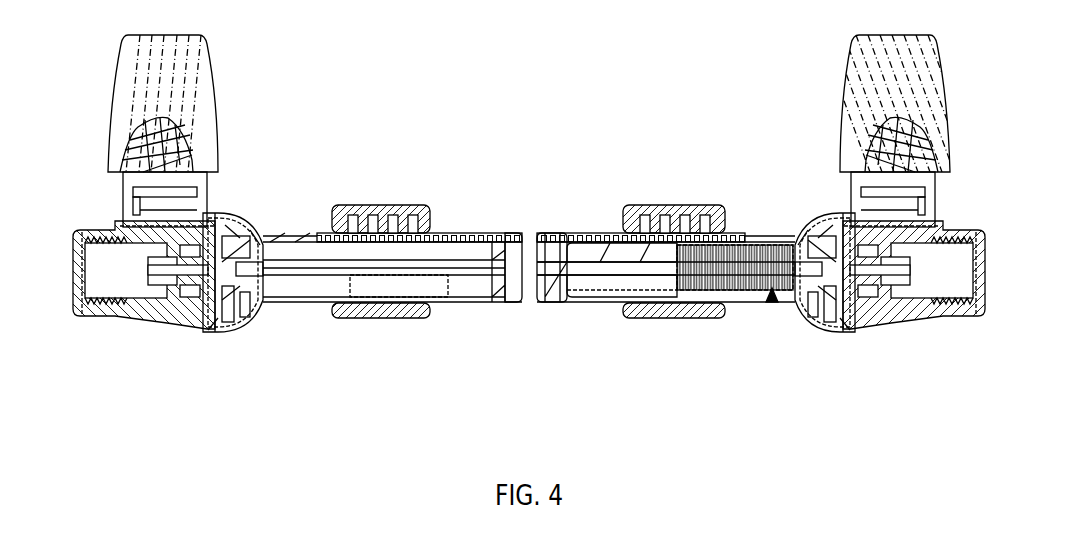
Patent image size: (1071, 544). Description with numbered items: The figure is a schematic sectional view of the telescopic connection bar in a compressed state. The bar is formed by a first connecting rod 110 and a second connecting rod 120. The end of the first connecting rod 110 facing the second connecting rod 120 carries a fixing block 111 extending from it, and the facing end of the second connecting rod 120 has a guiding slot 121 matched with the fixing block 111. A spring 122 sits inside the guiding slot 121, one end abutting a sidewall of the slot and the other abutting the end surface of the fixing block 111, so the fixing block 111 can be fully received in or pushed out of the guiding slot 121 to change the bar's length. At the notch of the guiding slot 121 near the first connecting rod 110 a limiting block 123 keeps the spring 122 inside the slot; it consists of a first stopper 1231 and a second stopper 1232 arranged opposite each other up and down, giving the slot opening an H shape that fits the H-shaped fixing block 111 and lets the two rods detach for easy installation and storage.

The first connecting rod 110 is at (287, 237).
The fixing block 111 is at (585, 233).
The second connecting rod 120 is at (778, 235).
The guiding slot 121 is at (772, 302).
The spring 122 is at (737, 300).
The limiting block 123 is at (645, 345).
The first stopper 1231 is at (585, 255).
The second stopper 1232 is at (552, 300).